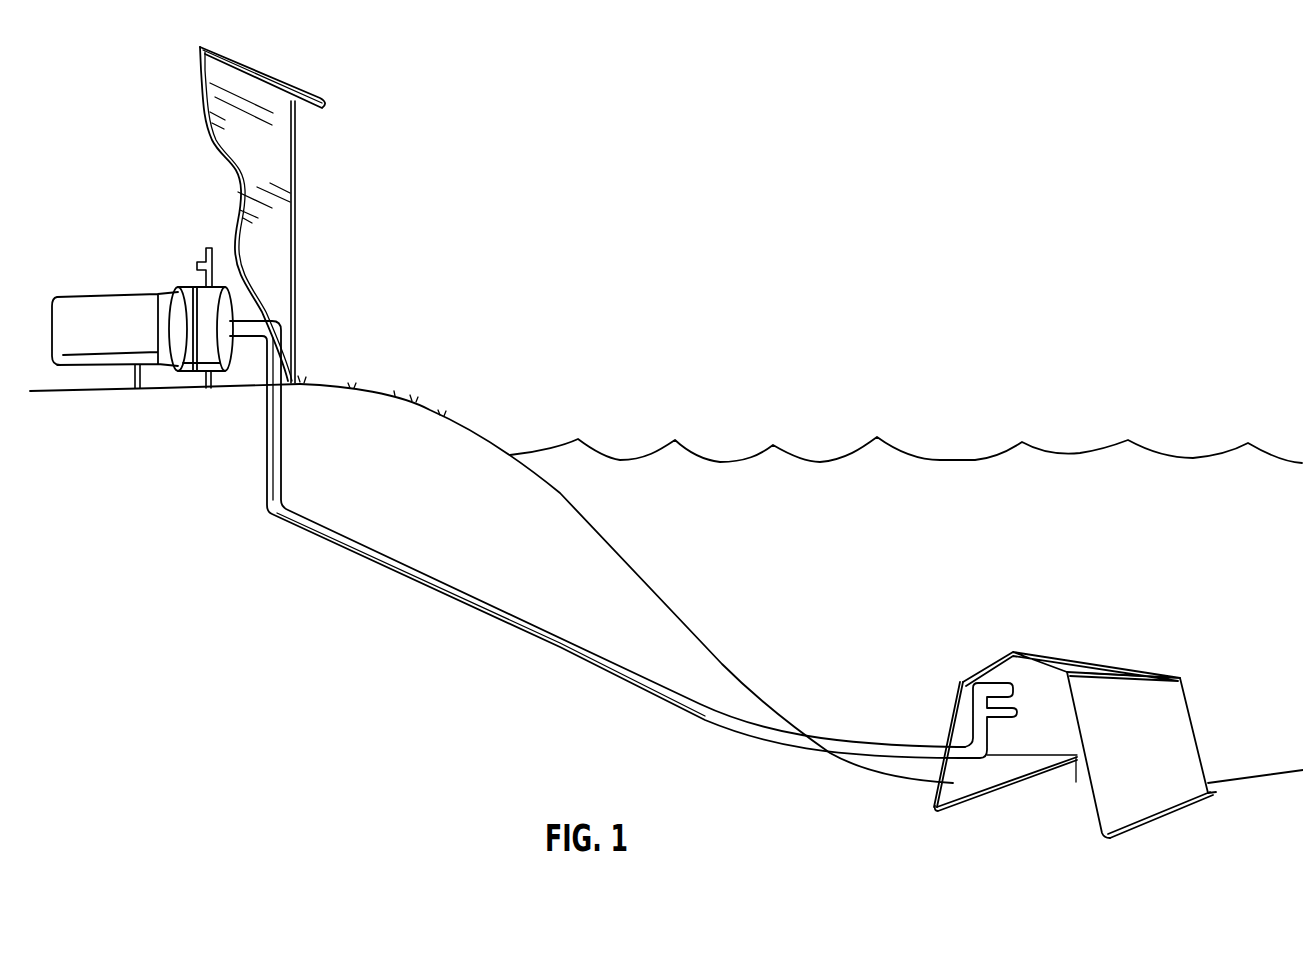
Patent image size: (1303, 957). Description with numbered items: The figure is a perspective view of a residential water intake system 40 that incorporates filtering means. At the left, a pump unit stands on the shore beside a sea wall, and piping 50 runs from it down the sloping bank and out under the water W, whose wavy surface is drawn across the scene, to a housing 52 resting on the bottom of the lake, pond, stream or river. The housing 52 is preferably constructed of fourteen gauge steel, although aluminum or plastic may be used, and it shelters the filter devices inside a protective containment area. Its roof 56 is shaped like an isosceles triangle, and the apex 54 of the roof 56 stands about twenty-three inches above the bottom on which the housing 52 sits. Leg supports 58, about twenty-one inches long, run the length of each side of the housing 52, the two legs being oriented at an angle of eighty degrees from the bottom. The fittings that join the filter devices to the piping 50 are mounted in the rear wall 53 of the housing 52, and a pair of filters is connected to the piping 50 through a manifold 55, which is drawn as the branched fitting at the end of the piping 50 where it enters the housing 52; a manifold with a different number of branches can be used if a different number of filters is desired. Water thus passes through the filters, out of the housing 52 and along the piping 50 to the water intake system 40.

The water intake system 40 is at (677, 563).
The piping 50 is at (753, 722).
The housing 52 is at (1096, 745).
The rear wall 53 is at (1042, 742).
The apex 54 is at (1042, 654).
The manifold 55 is at (993, 686).
The roof 56 is at (1100, 663).
The leg supports 58 is at (960, 787).
The water W is at (1120, 463).